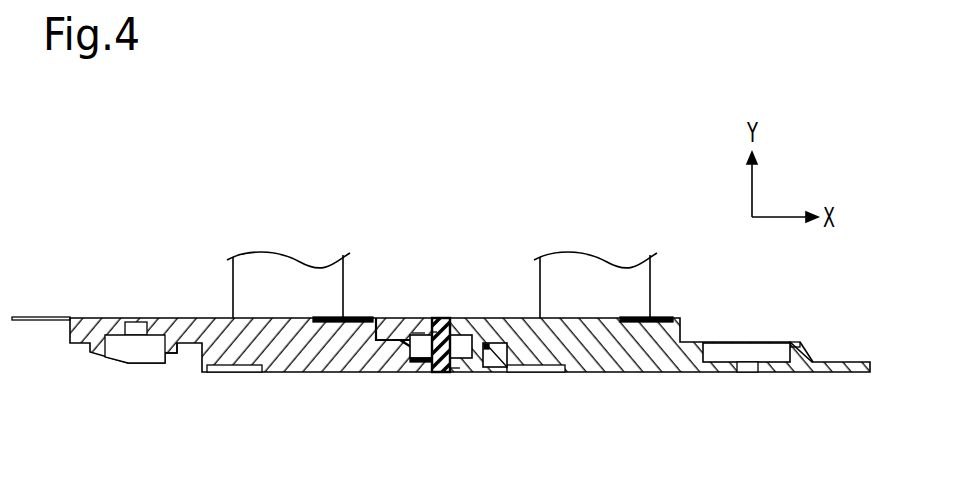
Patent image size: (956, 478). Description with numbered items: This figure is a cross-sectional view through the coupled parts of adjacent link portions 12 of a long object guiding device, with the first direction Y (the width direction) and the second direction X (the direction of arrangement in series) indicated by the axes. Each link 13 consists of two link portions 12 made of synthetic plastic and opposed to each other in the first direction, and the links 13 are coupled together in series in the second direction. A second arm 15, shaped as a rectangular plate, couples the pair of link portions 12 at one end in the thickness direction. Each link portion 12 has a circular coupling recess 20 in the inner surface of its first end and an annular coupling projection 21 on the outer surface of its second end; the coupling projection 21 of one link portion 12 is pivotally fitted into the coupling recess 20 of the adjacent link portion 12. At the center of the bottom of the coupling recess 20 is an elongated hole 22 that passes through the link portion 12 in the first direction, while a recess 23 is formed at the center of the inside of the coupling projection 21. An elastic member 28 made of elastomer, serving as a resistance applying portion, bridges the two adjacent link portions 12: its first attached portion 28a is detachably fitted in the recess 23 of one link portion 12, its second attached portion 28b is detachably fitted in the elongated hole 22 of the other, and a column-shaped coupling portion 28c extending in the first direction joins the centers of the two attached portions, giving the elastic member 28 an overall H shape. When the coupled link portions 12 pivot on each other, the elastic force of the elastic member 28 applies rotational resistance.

The link portion 12 is at (287, 373).
The link 13 is at (91, 353).
The second arm 15 is at (344, 268).
The coupling recess 20 is at (423, 373).
The coupling projection 21 is at (177, 362).
The elongated hole 22 is at (445, 373).
The recess 23 is at (146, 328).
The elastic member 28 is at (416, 345).
The first attached portion 28a is at (418, 332).
The second attached portion 28b is at (456, 368).
The coupling portion 28c is at (460, 334).